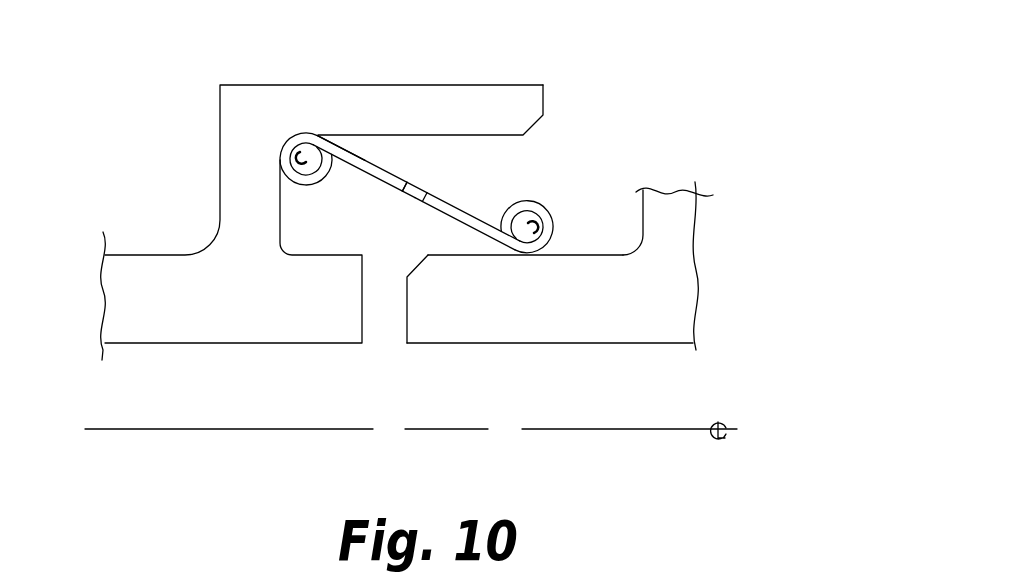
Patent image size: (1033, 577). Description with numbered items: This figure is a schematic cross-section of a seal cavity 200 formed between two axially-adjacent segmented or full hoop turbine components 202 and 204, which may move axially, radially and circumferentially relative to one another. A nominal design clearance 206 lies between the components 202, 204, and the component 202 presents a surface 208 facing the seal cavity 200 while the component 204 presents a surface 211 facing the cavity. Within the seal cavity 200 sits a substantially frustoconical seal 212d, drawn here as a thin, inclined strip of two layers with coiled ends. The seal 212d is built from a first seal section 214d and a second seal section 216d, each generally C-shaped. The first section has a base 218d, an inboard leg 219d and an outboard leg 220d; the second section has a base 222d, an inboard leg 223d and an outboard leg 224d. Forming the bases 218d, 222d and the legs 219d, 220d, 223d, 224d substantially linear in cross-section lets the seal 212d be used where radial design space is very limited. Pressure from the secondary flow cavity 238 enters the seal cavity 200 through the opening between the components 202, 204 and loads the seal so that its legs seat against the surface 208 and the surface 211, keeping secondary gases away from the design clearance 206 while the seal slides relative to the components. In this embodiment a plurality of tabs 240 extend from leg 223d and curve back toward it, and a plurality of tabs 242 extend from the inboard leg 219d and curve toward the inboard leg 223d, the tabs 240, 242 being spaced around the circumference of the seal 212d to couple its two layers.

The seal cavity 200 is at (631, 54).
The turbine component 202 is at (675, 345).
The turbine component 204 is at (222, 345).
The nominal design clearance 206 is at (406, 305).
The surface 208 is at (588, 255).
The surface 211 is at (491, 136).
The seal 212d is at (603, 158).
The first seal section 214d is at (390, 197).
The second seal section 216d is at (412, 176).
The base 218d is at (417, 199).
The inboard leg 219d is at (470, 229).
The outboard leg 220d is at (347, 177).
The base 222d is at (434, 193).
The inboard leg 223d is at (510, 203).
The outboard leg 224d is at (364, 146).
The secondary flow cavity 238 is at (541, 29).
The tabs 240 is at (294, 184).
The tabs 242 is at (556, 226).